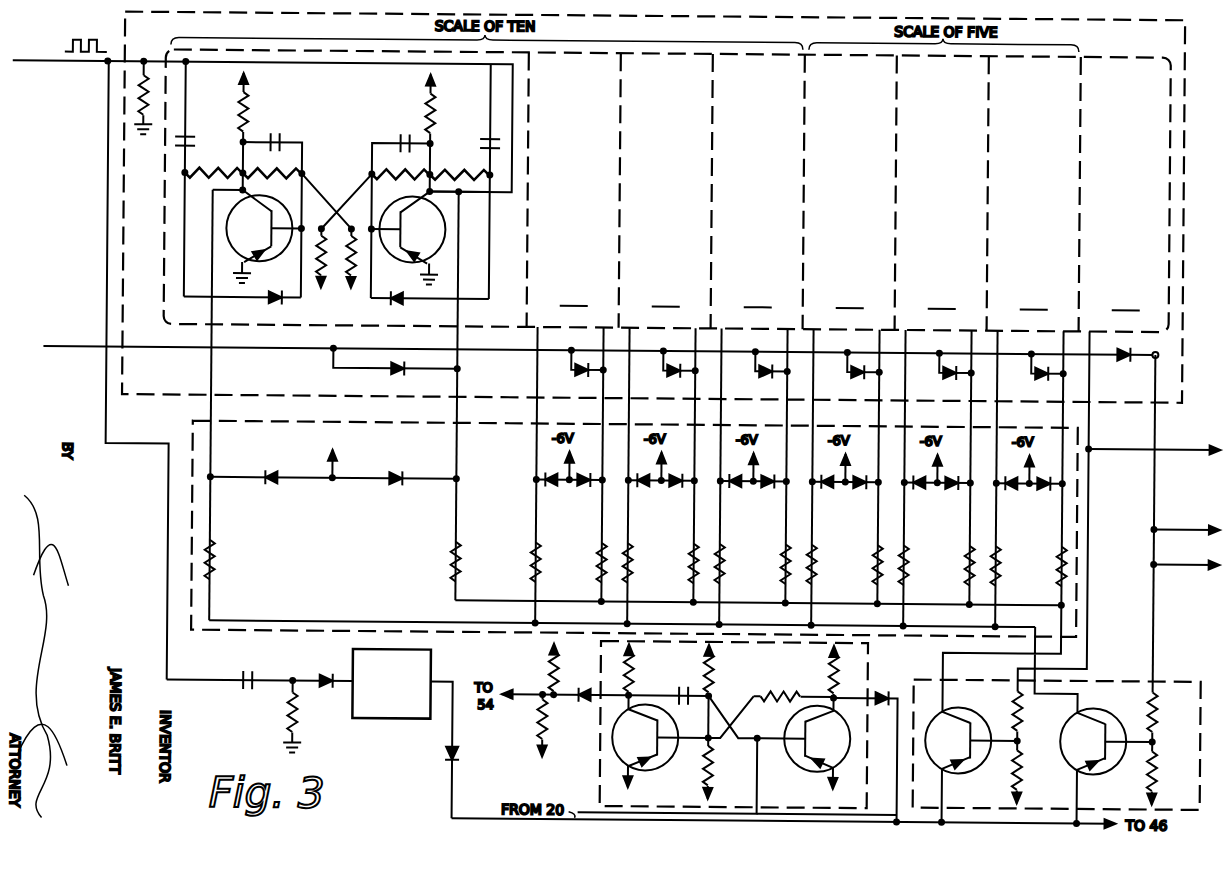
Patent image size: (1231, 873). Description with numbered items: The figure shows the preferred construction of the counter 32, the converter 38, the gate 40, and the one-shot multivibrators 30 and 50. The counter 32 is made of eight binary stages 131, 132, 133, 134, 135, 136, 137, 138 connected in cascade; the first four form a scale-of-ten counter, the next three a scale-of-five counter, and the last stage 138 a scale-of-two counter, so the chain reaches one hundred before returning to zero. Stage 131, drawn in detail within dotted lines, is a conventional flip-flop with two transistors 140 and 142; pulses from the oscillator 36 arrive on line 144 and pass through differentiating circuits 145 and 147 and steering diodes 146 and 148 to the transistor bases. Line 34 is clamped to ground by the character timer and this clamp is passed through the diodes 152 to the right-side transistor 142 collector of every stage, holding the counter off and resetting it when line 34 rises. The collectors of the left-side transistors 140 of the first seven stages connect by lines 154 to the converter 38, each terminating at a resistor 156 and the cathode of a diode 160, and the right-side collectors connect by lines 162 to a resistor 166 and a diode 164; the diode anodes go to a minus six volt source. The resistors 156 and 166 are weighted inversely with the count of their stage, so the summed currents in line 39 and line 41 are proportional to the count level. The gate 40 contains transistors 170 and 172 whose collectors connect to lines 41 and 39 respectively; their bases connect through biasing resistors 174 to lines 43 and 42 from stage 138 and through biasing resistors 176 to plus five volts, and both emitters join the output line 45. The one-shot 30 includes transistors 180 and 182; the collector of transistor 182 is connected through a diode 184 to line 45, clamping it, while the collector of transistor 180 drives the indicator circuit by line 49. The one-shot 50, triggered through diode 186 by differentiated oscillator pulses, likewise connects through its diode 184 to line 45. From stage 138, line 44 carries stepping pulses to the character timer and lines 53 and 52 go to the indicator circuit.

The one-shot multivibrator 30 is at (872, 656).
The counter 32 is at (121, 14).
The line 34 is at (72, 344).
The oscillator 36 is at (260, 115).
The converter 38 is at (187, 428).
The line 39 is at (970, 620).
The gate 40 is at (1180, 677).
The line 41 is at (1046, 604).
The line 42 is at (1152, 490).
The line 43 is at (1087, 535).
The line 44 is at (1195, 523).
The output line 45 is at (874, 818).
The line 49 is at (538, 690).
The one-shot multivibrator 50 is at (434, 660).
The line 52 is at (1196, 565).
The line 53 is at (1174, 444).
The binary stage 131 is at (162, 250).
The binary stage 132 is at (574, 297).
The binary stage 133 is at (666, 297).
The binary stage 134 is at (758, 298).
The binary stage 135 is at (850, 299).
The binary stage 136 is at (942, 300).
The binary stage 137 is at (1034, 300).
The binary stage 138 is at (1126, 301).
The transistor 140 is at (289, 215).
The transistor 142 is at (380, 215).
The line 144 is at (337, 193).
The differentiating circuit 145 is at (193, 169).
The steering diode 146 is at (272, 296).
The differentiating circuit 147 is at (481, 168).
The steering diode 148 is at (400, 296).
The diode 152 is at (387, 375).
The line 154 is at (214, 404).
The resistor 156 is at (222, 563).
The diode 160 is at (285, 486).
The line 162 is at (456, 408).
The diode 164 is at (394, 490).
The resistor 166 is at (450, 569).
The transistor 170 is at (982, 710).
The transistor 172 is at (1112, 711).
The biasing resistor 174 is at (1026, 712).
The biasing resistor 176 is at (1026, 768).
The transistor 180 is at (680, 724).
The transistor 182 is at (790, 724).
The diode 184 is at (446, 758).
The diode 186 is at (320, 676).